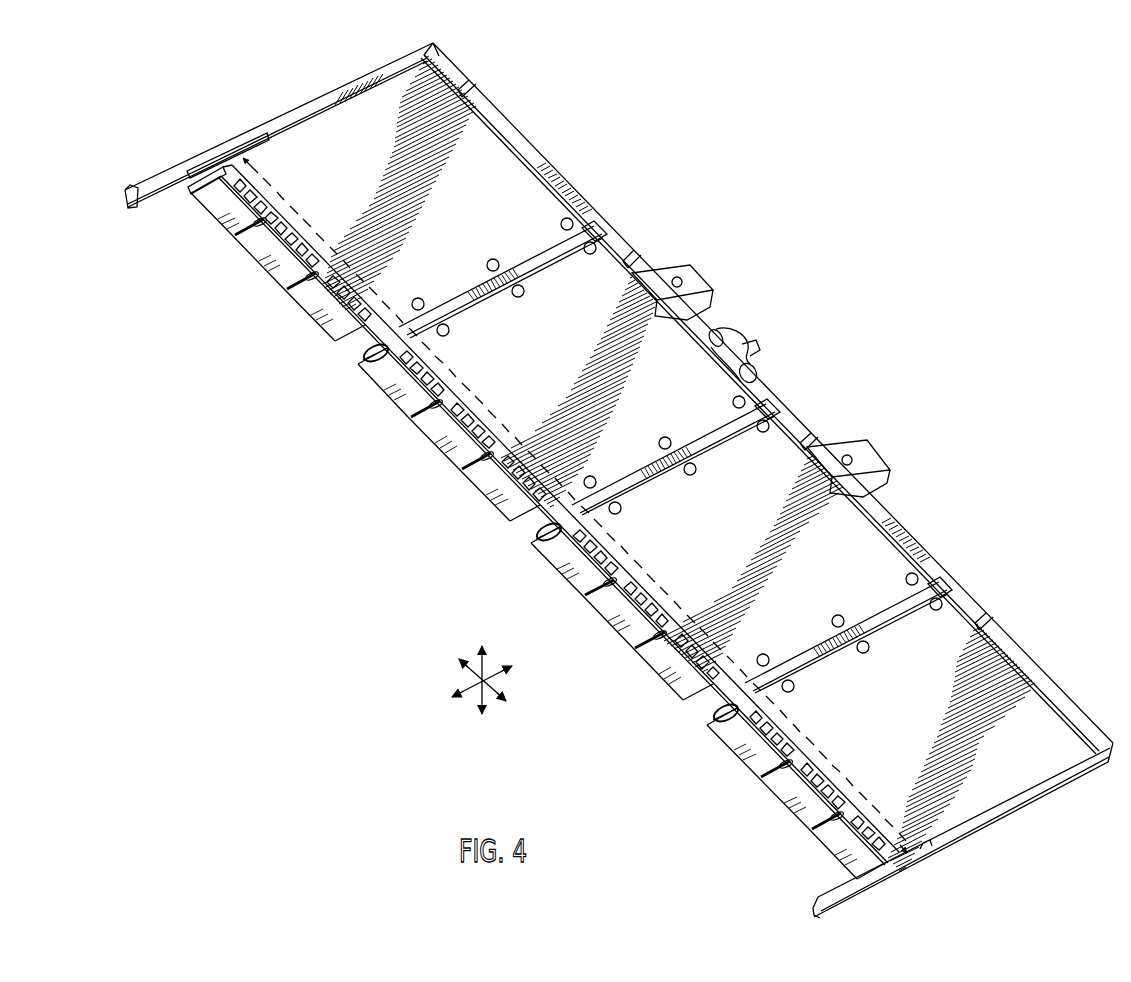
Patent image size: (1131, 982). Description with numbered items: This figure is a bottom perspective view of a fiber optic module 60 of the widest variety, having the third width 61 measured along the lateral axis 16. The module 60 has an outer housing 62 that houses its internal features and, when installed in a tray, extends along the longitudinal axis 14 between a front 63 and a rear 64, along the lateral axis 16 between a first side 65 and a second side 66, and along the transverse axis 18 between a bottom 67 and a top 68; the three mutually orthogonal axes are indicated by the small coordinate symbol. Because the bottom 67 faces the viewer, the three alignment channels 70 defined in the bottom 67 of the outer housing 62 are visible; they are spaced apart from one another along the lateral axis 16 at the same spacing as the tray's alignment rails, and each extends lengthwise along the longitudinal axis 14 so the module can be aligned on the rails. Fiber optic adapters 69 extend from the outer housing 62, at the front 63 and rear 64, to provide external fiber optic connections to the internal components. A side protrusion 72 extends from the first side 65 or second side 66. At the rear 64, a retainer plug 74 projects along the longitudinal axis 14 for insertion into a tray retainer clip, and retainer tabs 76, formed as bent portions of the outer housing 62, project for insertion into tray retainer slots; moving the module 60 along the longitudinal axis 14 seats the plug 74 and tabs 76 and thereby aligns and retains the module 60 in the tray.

The module 60 is at (624, 145).
The outer housing 62 is at (409, 76).
The second side 66 is at (310, 102).
The bottom 67 is at (373, 110).
The side protrusion 72 is at (247, 132).
The top 68 is at (548, 141).
The rear 64 is at (932, 558).
The retainer tab 76 is at (470, 75).
The first side 65 is at (1027, 818).
The alignment channel 70 is at (474, 278).
The retainer plug 74 is at (766, 339).
The width 61 is at (296, 212).
The fiber optic adapter 69 is at (308, 308).
The front 63 is at (526, 539).
The transverse axis 18 is at (475, 650).
The lateral axis 16 is at (461, 666).
The longitudinal axis 14 is at (467, 697).